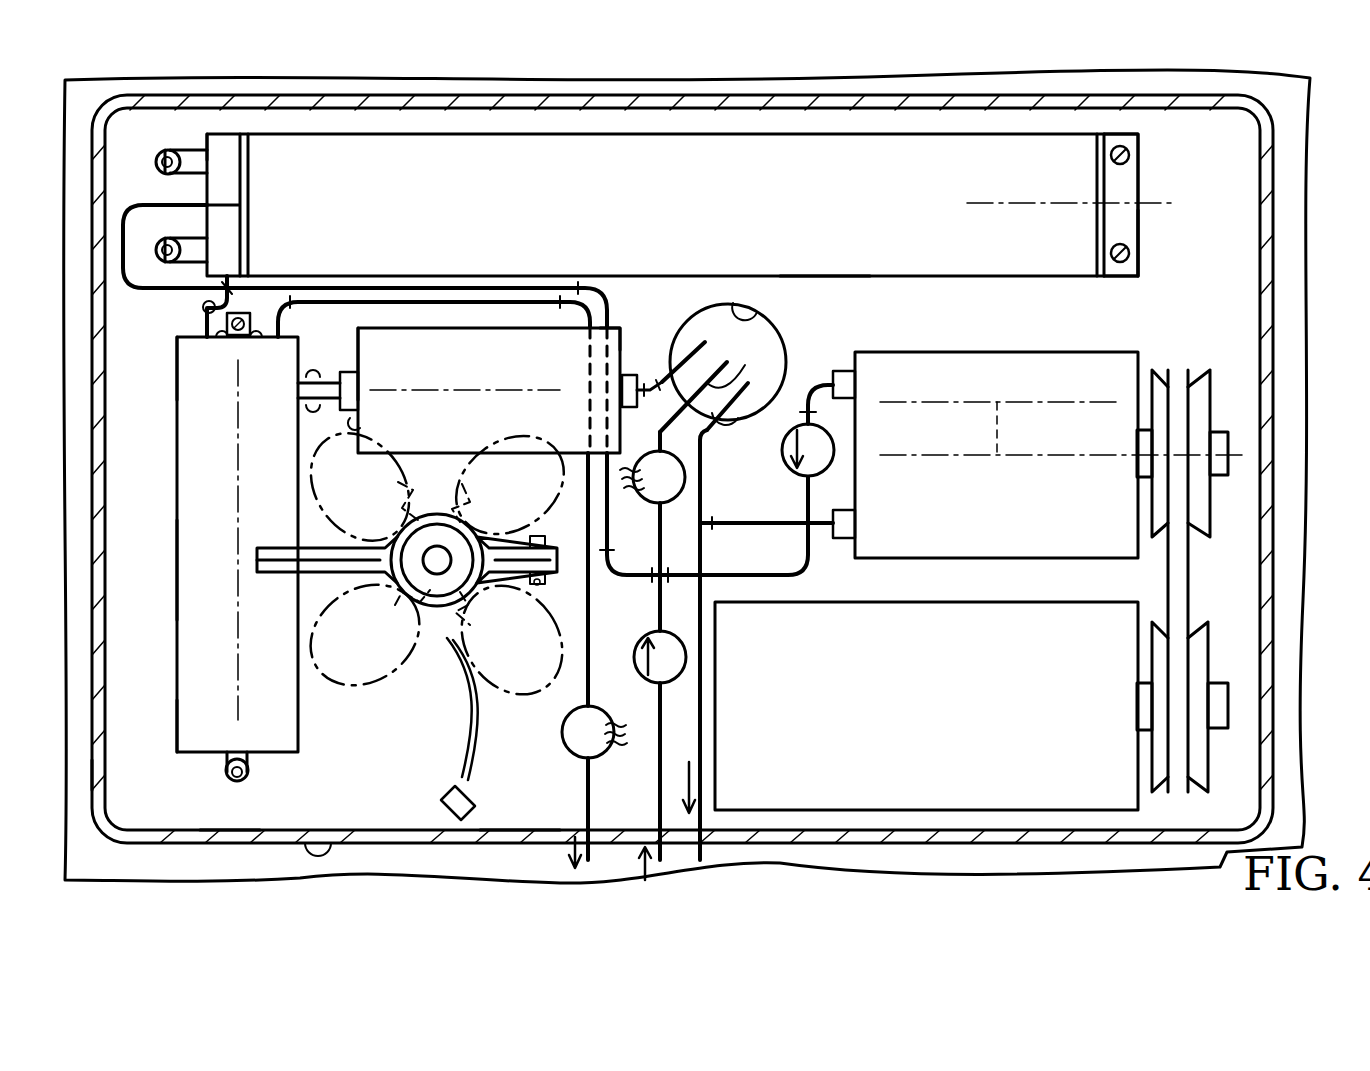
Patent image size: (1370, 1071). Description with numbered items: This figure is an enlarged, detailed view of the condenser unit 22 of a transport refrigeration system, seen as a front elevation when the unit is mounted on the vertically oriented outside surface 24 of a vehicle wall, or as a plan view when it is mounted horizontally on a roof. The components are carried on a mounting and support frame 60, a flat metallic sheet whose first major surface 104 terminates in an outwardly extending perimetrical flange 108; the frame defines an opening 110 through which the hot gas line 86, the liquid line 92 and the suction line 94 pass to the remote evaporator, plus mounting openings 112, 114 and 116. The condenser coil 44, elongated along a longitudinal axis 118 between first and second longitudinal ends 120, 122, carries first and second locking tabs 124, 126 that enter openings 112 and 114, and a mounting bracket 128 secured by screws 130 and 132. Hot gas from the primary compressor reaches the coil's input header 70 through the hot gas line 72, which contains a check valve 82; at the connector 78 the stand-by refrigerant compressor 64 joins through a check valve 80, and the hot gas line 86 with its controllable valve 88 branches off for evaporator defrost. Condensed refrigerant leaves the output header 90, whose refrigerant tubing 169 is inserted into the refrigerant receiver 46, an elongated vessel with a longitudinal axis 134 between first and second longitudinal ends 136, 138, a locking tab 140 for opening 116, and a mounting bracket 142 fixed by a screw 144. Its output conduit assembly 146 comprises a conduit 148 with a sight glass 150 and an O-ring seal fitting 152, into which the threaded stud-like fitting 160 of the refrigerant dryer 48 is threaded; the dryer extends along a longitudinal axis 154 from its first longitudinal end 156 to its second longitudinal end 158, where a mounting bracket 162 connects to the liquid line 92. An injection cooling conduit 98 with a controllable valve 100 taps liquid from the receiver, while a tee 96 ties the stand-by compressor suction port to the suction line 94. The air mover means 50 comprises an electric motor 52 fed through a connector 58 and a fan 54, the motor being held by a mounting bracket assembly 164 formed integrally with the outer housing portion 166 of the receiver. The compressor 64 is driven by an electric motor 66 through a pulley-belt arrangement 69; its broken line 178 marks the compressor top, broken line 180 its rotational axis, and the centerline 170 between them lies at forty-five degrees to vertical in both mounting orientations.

The condenser unit 22 is at (385, 840).
The vertically oriented outside surface 24 is at (518, 853).
The condenser coil 44 is at (826, 277).
The refrigerant receiver 46 is at (212, 559).
The refrigerant dryer 48 is at (624, 346).
The air mover means 50 is at (420, 617).
The electric motor 52 is at (394, 532).
The fan 54 is at (528, 698).
The connector 58 is at (448, 793).
The mounting and support frame 60 is at (332, 840).
The refrigerant compressor 64 is at (1040, 428).
The electric motor 66 is at (963, 600).
The pulley-belt arrangement 69 is at (1193, 603).
The input header 70 is at (658, 219).
The hot gas line 72 is at (657, 811).
The connector 78 is at (656, 585).
The check valve 80 is at (784, 467).
The check valve 82 is at (636, 677).
The hot gas line 86 is at (716, 389).
The controllable valve 88 is at (648, 507).
The output header 90 is at (222, 230).
The liquid line 92 is at (700, 342).
The suction line 94 is at (721, 415).
The tee 96 is at (708, 528).
The conduit 98 is at (587, 778).
The controllable valve 100 is at (568, 754).
The first major surface 104 is at (138, 800).
The perimetrical flange 108 is at (233, 830).
The opening 110 is at (736, 357).
The opening 112 is at (160, 170).
The opening 114 is at (165, 282).
The opening 116 is at (225, 781).
The longitudinal axis 118 is at (978, 205).
The first longitudinal end 120 is at (207, 143).
The second longitudinal end 122 is at (1140, 183).
The first locking tab 124 is at (196, 162).
The second locking tab 126 is at (200, 250).
The mounting bracket 128 is at (1140, 222).
The screw 130 is at (1108, 155).
The screw 132 is at (1108, 253).
The longitudinal axis 134 is at (238, 522).
The first longitudinal end 136 is at (190, 760).
The second longitudinal end 138 is at (177, 345).
The locking tab 140 is at (240, 757).
The mounting bracket 142 is at (222, 336).
The screw 144 is at (258, 339).
The output conduit assembly 146 is at (305, 338).
The conduit 148 is at (302, 410).
The sight glass 150 is at (302, 380).
The O-ring seal fitting 152 is at (360, 382).
The longitudinal axis 154 is at (466, 368).
The first longitudinal end 156 is at (358, 427).
The second longitudinal end 158 is at (621, 328).
The threaded stud-like fitting 160 is at (382, 386).
The mounting bracket 162 is at (646, 384).
The mounting bracket assembly 164 is at (537, 612).
The outer housing portion 166 is at (190, 577).
The refrigerant tubing 169 is at (204, 318).
The centerline 170 is at (997, 440).
The broken line 178 is at (922, 402).
The broken line 180 is at (972, 457).